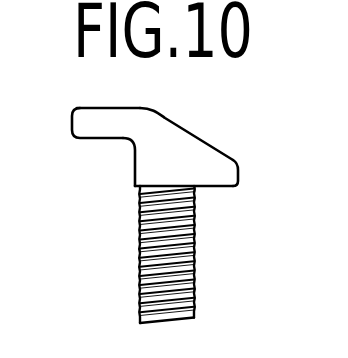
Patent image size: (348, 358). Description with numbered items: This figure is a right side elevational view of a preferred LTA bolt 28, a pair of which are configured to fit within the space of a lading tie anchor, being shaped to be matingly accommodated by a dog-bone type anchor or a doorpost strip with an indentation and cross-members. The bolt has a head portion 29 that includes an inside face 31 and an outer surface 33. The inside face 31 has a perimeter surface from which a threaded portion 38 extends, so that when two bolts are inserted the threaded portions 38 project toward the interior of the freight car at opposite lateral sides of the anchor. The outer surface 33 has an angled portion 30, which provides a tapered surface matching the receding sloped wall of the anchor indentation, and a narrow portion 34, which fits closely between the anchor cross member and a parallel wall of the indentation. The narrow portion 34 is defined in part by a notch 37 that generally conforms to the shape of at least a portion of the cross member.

The LTA bolt 28 is at (126, 236).
The head portion 29 is at (60, 107).
The angled portion 30 is at (206, 140).
The inside face 31 is at (228, 187).
The outer surface 33 is at (174, 123).
The narrow portion 34 is at (131, 106).
The notch 37 is at (134, 163).
The threaded portion 38 is at (212, 187).